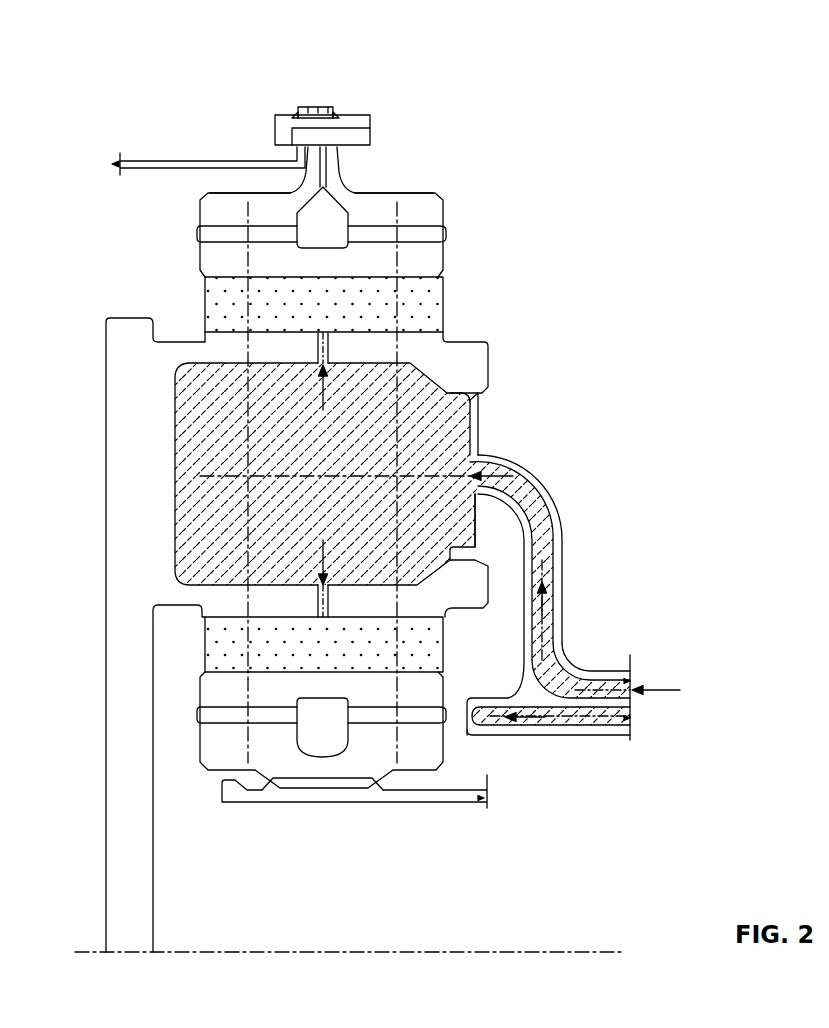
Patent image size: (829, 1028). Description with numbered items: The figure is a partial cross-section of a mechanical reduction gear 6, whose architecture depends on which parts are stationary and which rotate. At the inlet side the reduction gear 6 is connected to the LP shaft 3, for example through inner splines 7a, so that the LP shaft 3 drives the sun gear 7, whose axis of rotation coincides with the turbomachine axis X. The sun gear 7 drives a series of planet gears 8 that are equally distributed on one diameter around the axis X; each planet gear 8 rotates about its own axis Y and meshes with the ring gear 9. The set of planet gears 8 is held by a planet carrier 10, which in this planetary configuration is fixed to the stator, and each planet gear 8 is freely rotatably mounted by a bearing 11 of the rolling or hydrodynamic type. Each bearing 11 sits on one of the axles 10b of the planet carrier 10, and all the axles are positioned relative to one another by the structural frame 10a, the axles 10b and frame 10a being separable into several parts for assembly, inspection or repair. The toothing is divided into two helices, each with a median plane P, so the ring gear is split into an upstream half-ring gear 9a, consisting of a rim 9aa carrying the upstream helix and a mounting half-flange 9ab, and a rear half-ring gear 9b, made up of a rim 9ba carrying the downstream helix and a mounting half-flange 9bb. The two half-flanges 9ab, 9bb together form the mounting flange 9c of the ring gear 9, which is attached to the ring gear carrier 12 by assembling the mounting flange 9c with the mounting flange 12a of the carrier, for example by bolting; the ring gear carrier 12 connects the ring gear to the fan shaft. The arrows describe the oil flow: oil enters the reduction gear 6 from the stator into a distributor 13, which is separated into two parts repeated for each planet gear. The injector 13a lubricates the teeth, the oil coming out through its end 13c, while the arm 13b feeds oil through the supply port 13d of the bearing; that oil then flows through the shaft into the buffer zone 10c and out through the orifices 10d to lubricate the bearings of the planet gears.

The LP shaft 3 is at (453, 802).
The reduction gear 6 is at (590, 284).
The sun gear 7 is at (208, 735).
The inner splines 7a is at (297, 783).
The planet gear 8 is at (208, 698).
The ring gear 9 is at (335, 194).
The upstream half-ring gear 9a is at (212, 208).
The rim 9aa is at (225, 202).
The mounting half-flange 9ab is at (313, 106).
The rear half-ring gear 9b is at (430, 216).
The rim 9ba is at (383, 203).
The mounting half-flange 9bb is at (361, 86).
The mounting flange 9c is at (336, 66).
The planet carrier 10 is at (478, 342).
The structural frame 10a is at (117, 423).
The axle 10b is at (478, 588).
The buffer zone 10c is at (222, 518).
The orifice 10d is at (328, 346).
The bearing 11 is at (437, 303).
The ring gear carrier 12 is at (160, 160).
The mounting flange 12a is at (296, 110).
The distributor 13 is at (630, 630).
The injector 13a is at (562, 728).
The arm 13b is at (553, 535).
The end 13c is at (468, 737).
The supply port 13d is at (478, 400).
The median plane P is at (248, 744).
The axis of rotation X is at (570, 950).
The planet gear axis Y is at (472, 465).